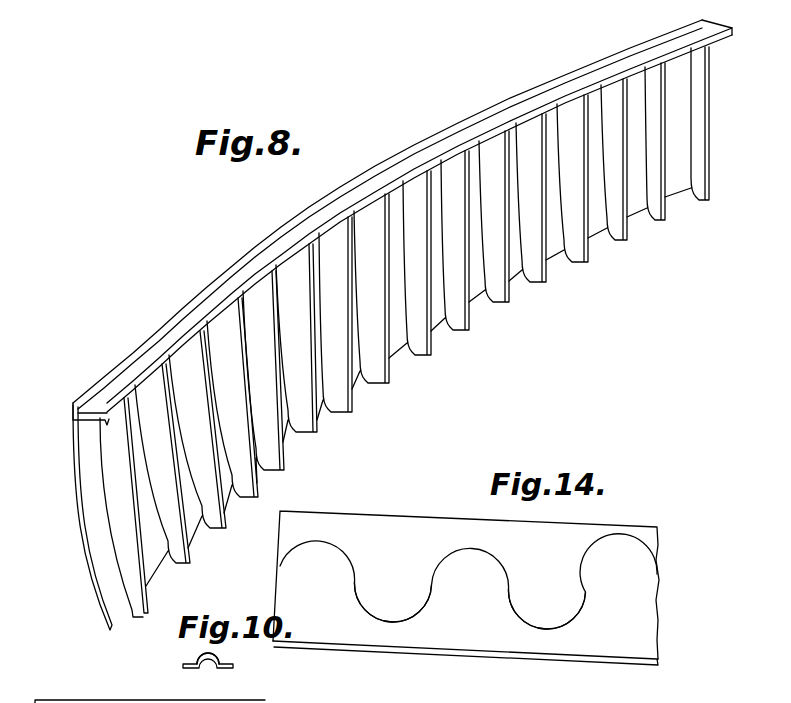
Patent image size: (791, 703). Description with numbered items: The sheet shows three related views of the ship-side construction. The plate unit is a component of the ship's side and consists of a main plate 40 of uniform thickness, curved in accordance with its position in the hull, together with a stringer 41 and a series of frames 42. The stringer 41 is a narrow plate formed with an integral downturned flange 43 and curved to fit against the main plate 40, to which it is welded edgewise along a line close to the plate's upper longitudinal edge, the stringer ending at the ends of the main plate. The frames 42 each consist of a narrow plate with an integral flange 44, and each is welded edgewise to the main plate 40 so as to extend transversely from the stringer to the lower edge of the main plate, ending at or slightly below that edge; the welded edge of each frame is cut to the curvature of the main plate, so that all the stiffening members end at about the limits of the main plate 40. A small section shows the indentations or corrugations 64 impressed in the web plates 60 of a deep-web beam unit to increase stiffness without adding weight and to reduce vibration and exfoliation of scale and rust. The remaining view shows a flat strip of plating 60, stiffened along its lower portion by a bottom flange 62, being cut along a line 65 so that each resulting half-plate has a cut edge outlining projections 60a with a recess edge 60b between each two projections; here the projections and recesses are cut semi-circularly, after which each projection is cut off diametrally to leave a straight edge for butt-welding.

In FIG. 8, the main plate 40 is at (72, 494).
In FIG. 8, the stringer 41 is at (258, 258).
In FIG. 8, the frames 42 is at (283, 466).
In FIG. 8, the downturned flange 43 is at (468, 148).
In FIG. 8, the flange 44 is at (398, 385).
In FIG. 10, the web plates 60 is at (187, 668).
In FIG. 10, the indentations or corrugations 64 is at (198, 656).
In FIG. 14, the cutting line 65 is at (466, 585).
In FIG. 14, the projections 60a is at (468, 581).
In FIG. 14, the recess edge 60b is at (551, 616).
In FIG. 14, the bottom flange 62 is at (546, 661).